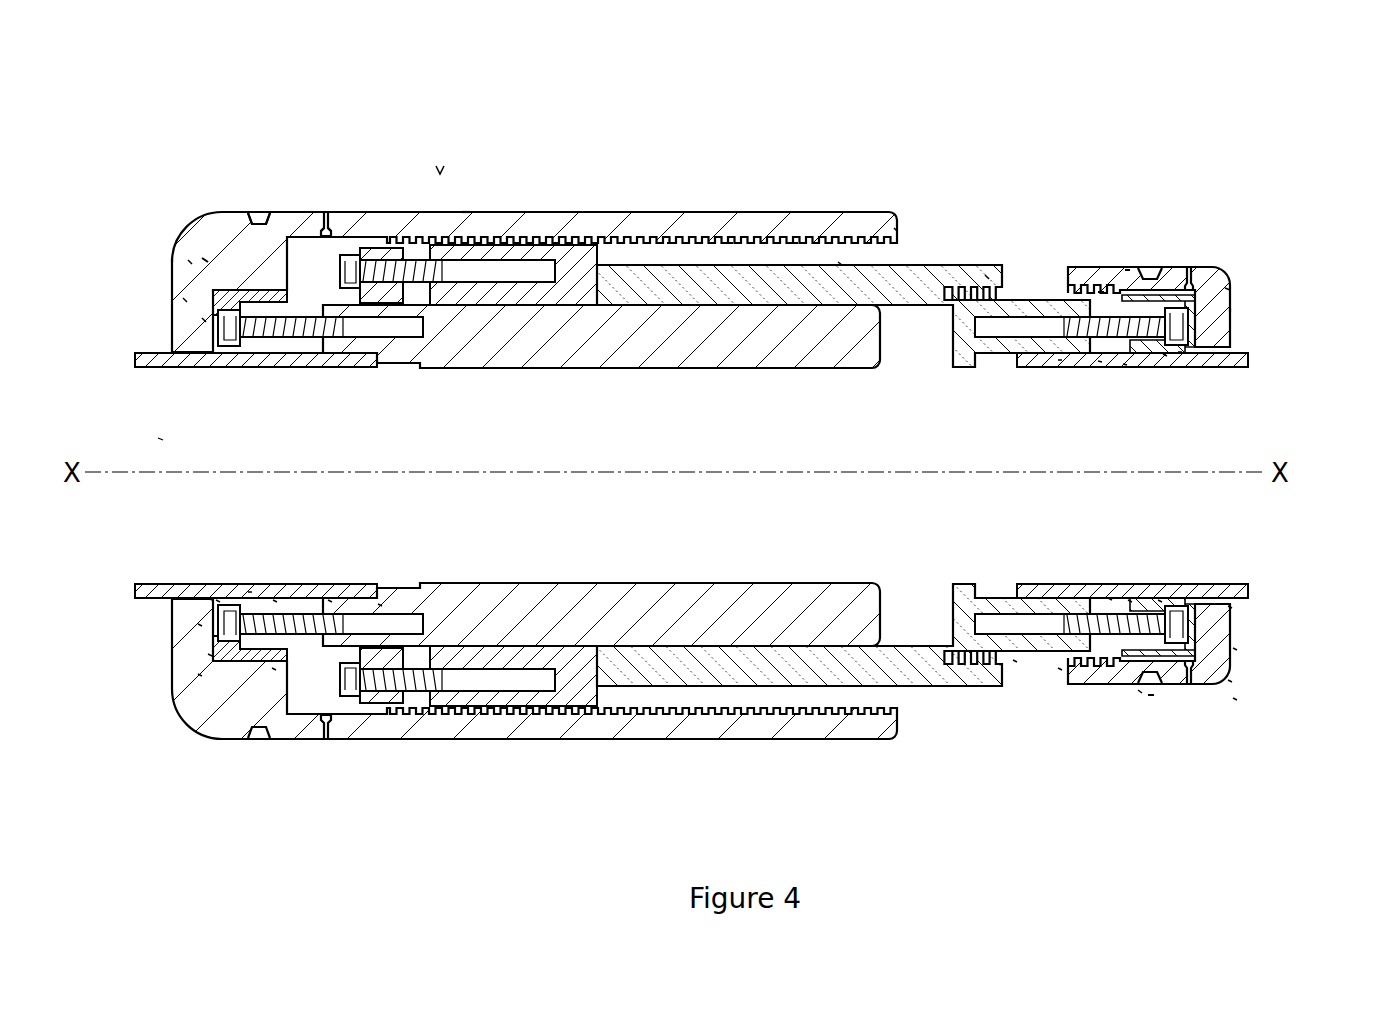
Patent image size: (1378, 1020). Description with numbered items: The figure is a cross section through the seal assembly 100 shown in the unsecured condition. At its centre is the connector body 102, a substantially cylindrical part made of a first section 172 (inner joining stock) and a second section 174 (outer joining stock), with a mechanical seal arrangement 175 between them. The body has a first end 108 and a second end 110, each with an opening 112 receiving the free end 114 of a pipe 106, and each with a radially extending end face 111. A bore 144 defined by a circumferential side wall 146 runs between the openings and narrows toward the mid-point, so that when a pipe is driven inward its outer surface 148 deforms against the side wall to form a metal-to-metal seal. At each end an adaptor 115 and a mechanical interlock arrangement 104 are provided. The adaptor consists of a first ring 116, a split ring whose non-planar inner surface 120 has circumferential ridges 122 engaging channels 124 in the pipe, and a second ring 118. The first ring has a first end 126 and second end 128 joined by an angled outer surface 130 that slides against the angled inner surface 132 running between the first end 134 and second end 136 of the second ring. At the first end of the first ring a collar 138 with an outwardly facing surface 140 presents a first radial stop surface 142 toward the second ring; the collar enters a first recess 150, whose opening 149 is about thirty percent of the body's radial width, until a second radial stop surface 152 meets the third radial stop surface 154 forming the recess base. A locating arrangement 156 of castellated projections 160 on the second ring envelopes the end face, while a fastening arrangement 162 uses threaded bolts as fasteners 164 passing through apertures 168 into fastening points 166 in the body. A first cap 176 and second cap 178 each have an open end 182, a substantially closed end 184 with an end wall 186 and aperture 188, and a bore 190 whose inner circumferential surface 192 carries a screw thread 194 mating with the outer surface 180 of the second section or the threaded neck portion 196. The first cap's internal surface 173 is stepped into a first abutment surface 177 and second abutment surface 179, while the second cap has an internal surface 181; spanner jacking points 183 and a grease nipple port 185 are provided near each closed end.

The seal assembly 100 is at (440, 170).
The connector body 102 is at (466, 212).
The mechanical interlock arrangement 104 is at (1205, 628).
The pipe 106 is at (138, 360).
The first end 108 is at (226, 214).
The second end 110 is at (1212, 267).
The end face 111 is at (330, 670).
The opening 112 is at (160, 438).
The free end 114 is at (420, 600).
The adaptor 115 is at (210, 655).
The first ring 116 is at (218, 600).
The second ring 118 is at (200, 625).
The inner surface 120 is at (1212, 600).
The circumferential ridges 122 is at (1160, 600).
The channels 124 is at (1141, 358).
The first end 126 is at (1100, 362).
The second end 128 is at (1180, 353).
The angled outer surface 130 is at (1125, 365).
The angled inner surface 132 is at (1165, 355).
The first end 134 is at (210, 600).
The second end 136 is at (200, 675).
The collar 138 is at (1110, 598).
The outwardly facing surface 140 is at (285, 347).
The first radial stop surface 142 is at (1130, 600).
The bore 144 is at (890, 380).
The circumferential side wall 146 is at (965, 655).
The outer surface 148 is at (1015, 660).
The opening 149 is at (330, 600).
The first recess 150 is at (292, 615).
The second radial stop surface 152 is at (1060, 360).
The third radial stop surface 154 is at (380, 605).
The locating arrangement 156 is at (285, 665).
The projections 160 is at (275, 670).
The fastening arrangement 162 is at (230, 715).
The fasteners 164 is at (300, 660).
The fastening points 166 is at (440, 625).
The apertures 168 is at (1230, 680).
The first section 172 is at (572, 300).
The internal surface 173 is at (258, 290).
The second section 174 is at (988, 278).
The mechanical seal arrangement 175 is at (351, 256).
The first cap 176 is at (205, 260).
The first abutment surface 177 is at (185, 300).
The second cap 178 is at (1227, 290).
The second abutment surface 179 is at (340, 310).
The outer surface 180 is at (840, 262).
The internal surface 181 is at (1235, 650).
The open end 182 is at (896, 228).
The spanner jacking points 183 is at (259, 212).
The substantially closed end 184 is at (173, 256).
The grease nipple port 185 is at (326, 212).
The end wall 186 is at (190, 262).
The aperture 188 is at (205, 320).
The bore 190 is at (730, 241).
The inner circumferential surface 192 is at (670, 240).
The screw thread 194 is at (795, 241).
The threaded neck portion 196 is at (1060, 670).